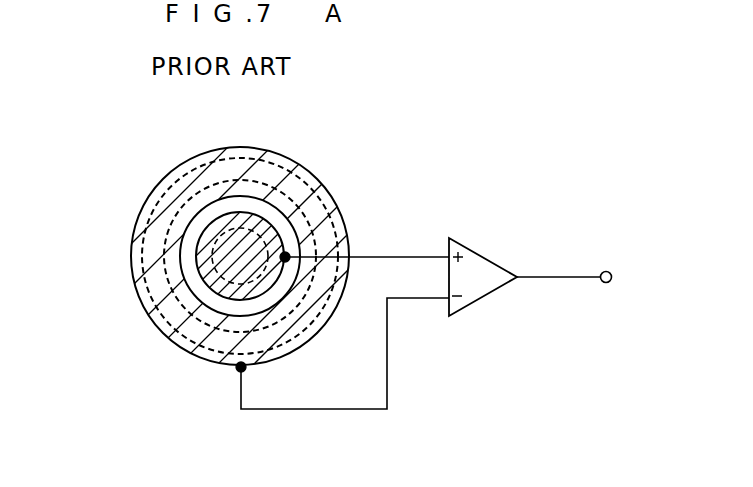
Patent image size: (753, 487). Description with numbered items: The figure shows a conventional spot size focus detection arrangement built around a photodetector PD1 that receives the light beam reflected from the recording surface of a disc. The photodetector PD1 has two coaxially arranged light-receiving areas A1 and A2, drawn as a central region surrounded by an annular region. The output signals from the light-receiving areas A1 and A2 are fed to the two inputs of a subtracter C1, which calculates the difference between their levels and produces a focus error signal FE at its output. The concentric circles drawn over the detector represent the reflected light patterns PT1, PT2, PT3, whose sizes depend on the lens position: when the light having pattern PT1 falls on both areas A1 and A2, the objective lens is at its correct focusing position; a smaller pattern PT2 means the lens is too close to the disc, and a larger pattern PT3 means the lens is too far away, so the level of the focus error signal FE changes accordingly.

The photodetector PD1 is at (405, 170).
The reflected light pattern PT3 is at (213, 152).
The light-receiving area A2 is at (273, 148).
The reflected light pattern PT1 is at (177, 300).
The light-receiving area A1 is at (198, 218).
The reflected light pattern PT2 is at (210, 269).
The subtracter C1 is at (488, 258).
The focus error signal FE is at (586, 274).